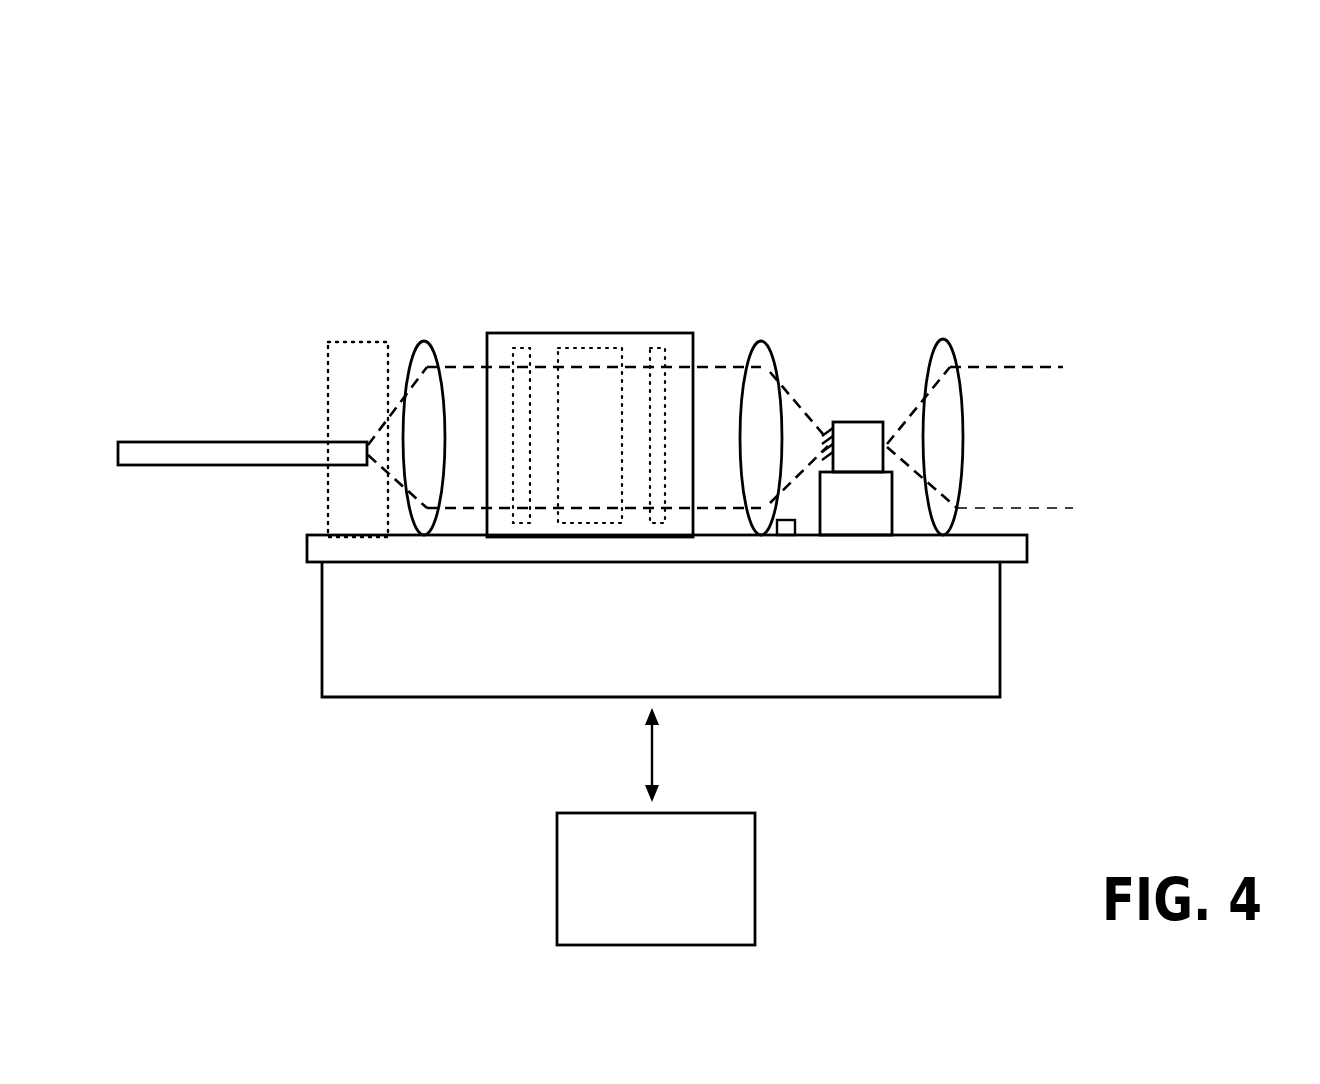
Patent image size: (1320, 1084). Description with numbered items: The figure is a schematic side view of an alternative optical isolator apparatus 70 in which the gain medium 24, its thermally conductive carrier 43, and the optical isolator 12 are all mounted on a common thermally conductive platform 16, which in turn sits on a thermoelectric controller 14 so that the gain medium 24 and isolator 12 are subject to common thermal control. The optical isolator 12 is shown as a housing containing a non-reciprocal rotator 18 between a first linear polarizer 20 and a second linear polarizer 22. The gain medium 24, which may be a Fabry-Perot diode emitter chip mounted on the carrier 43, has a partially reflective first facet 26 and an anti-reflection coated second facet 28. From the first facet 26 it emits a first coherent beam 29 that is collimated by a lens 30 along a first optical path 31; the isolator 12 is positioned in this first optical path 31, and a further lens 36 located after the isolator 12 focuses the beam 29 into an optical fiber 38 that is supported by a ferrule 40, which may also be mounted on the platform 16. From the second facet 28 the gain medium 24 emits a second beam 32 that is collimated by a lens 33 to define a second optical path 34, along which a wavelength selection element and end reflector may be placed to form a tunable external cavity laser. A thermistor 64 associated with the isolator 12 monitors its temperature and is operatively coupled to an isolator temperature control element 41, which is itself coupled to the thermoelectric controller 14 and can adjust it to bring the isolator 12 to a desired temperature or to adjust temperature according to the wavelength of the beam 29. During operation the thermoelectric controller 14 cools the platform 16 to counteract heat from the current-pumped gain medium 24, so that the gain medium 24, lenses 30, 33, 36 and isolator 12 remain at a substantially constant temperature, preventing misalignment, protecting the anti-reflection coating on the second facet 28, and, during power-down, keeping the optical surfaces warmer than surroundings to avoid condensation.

The optical isolator 12 is at (633, 342).
The thermoelectric controller 14 is at (972, 652).
The platform 16 is at (1013, 548).
The non-reciprocal rotator 18 is at (583, 353).
The first linear polarizer 20 is at (655, 350).
The second linear polarizer 22 is at (522, 348).
The gain medium 24 is at (847, 428).
The first facet 26 is at (825, 432).
The second facet 28 is at (885, 427).
The first coherent beam 29 is at (712, 377).
The lens 30 is at (760, 340).
The first optical path 31 is at (470, 377).
The second beam 32 is at (988, 493).
The lens 33 is at (942, 338).
The second optical path 34 is at (1035, 368).
The lens 36 is at (422, 343).
The optical fiber 38 is at (230, 448).
The ferrule 40 is at (328, 363).
The isolator temperature control element 41 is at (755, 852).
The carrier 43 is at (852, 515).
The thermistor 64 is at (797, 528).
The optical isolator apparatus 70 is at (1120, 212).